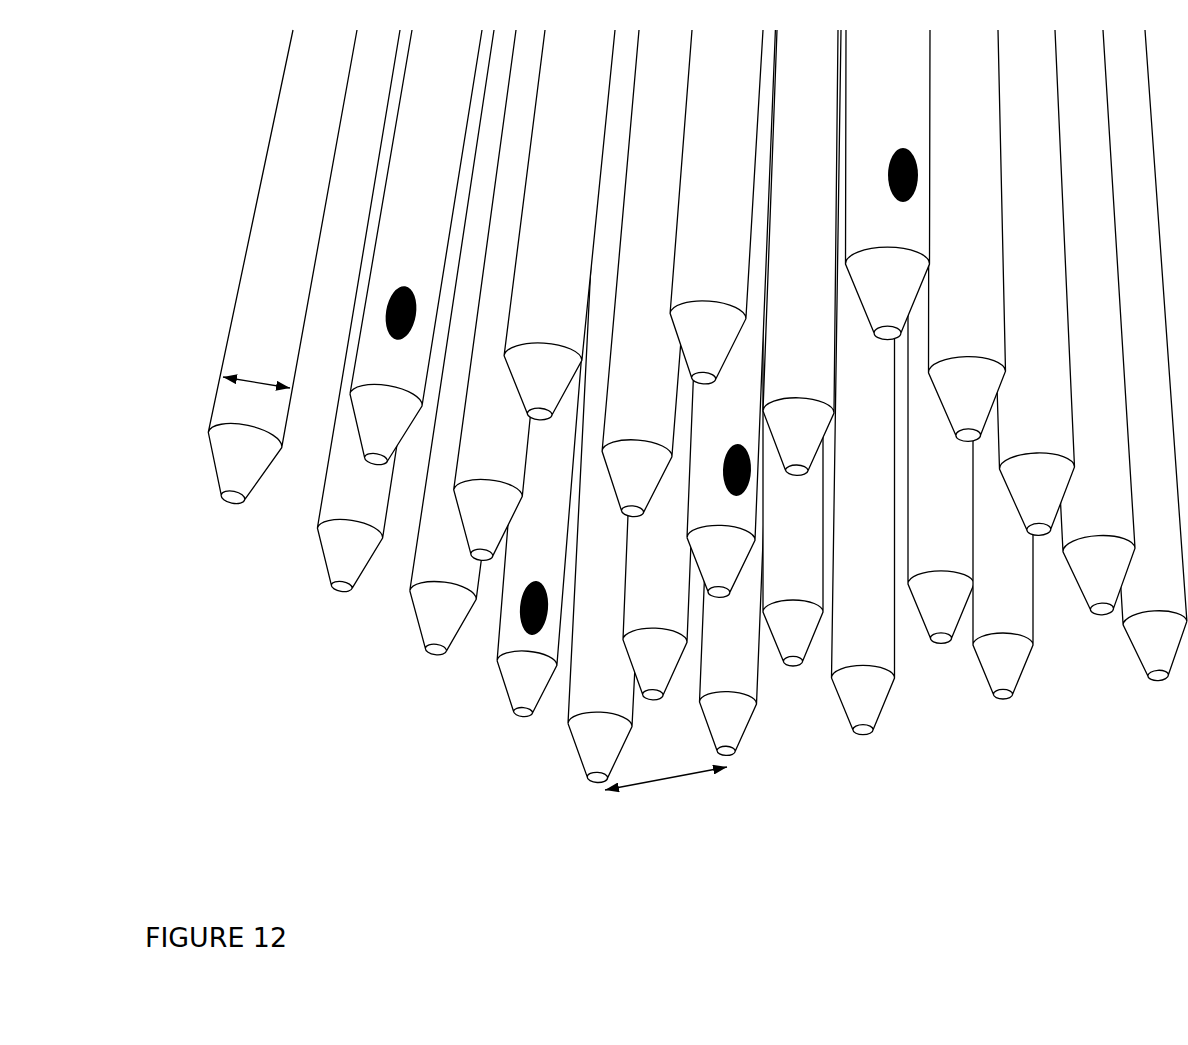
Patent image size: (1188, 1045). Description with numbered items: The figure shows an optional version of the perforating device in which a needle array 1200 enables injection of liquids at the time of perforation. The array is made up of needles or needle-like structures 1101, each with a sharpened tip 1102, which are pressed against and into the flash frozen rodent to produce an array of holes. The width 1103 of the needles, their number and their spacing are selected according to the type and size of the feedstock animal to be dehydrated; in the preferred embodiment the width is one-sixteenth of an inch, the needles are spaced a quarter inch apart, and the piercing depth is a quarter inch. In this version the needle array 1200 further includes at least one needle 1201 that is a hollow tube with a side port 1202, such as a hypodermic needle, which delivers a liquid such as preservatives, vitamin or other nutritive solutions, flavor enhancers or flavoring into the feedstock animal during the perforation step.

The needle array 1200 is at (670, 456).
The needle 1101 is at (995, 618).
The sharpened tip 1102 is at (260, 365).
The width of the needles 1103 is at (667, 793).
The needle 1201 is at (718, 553).
The side port 1202 is at (522, 607).